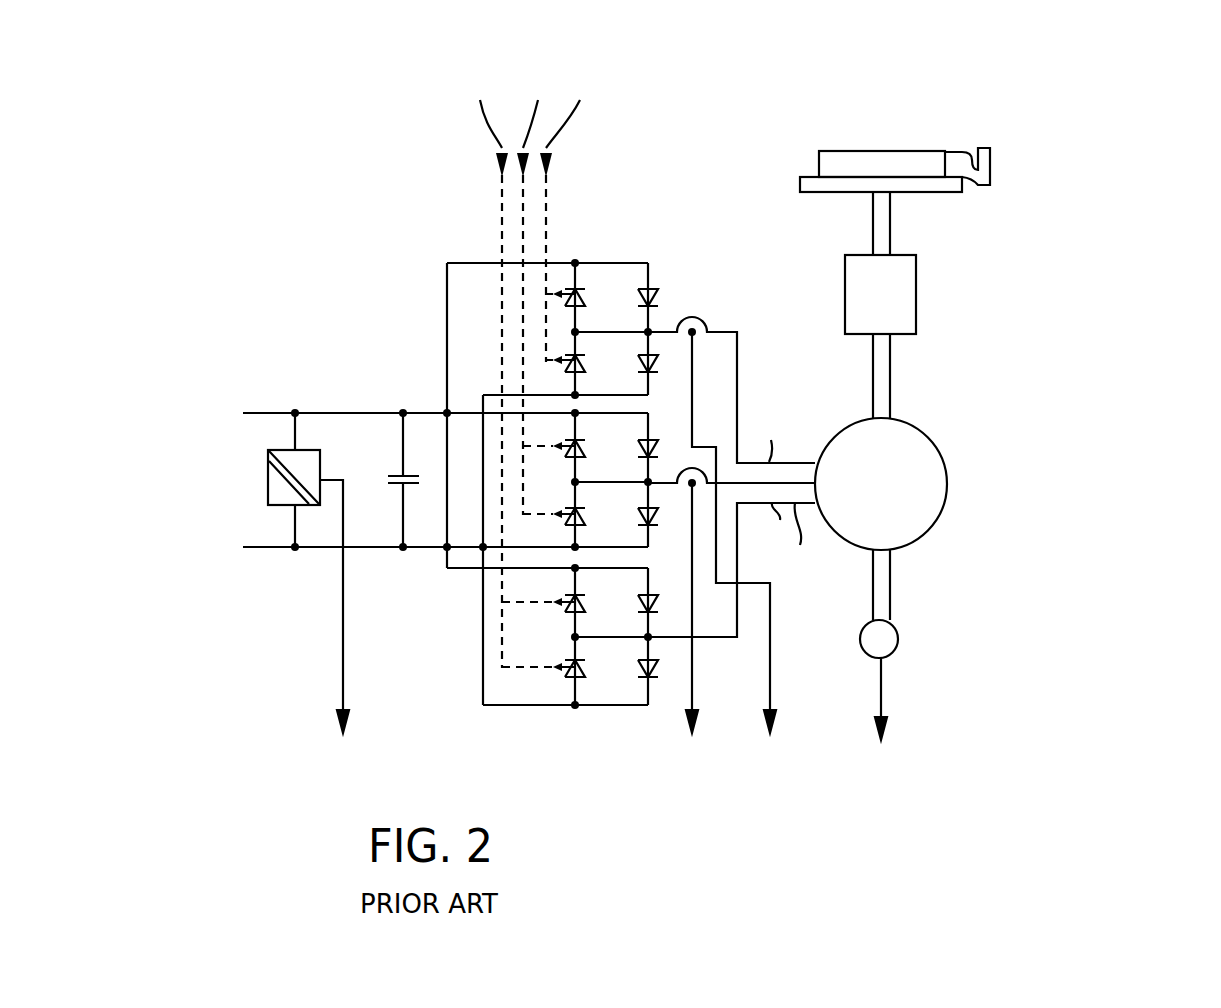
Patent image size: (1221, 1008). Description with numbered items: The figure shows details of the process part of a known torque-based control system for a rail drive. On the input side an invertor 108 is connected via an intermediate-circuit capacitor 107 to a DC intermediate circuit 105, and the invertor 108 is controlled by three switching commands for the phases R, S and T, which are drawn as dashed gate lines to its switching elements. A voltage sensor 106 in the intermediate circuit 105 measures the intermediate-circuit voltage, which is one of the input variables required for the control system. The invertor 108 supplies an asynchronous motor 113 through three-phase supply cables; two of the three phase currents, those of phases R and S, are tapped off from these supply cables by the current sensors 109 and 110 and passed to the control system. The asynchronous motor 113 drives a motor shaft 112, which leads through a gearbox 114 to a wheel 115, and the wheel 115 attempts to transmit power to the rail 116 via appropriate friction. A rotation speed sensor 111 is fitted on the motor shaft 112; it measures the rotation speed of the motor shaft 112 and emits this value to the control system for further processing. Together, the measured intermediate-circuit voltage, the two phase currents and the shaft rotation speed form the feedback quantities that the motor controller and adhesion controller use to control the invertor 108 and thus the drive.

The DC intermediate circuit 105 is at (352, 383).
The voltage sensor 106 is at (285, 497).
The intermediate-circuit capacitor 107 is at (386, 485).
The invertor 108 is at (585, 760).
The current sensor 109 is at (683, 320).
The current sensor 110 is at (692, 490).
The rotation speed sensor 111 is at (890, 637).
The motor shaft 112 is at (883, 365).
The asynchronous motor 113 is at (935, 478).
The gearbox 114 is at (894, 282).
The wheel 115 is at (876, 167).
The rail 116 is at (962, 167).